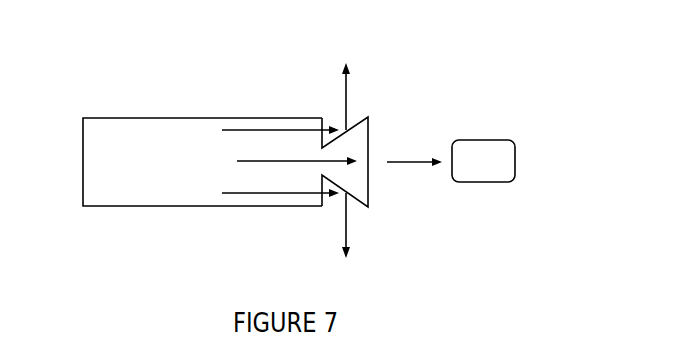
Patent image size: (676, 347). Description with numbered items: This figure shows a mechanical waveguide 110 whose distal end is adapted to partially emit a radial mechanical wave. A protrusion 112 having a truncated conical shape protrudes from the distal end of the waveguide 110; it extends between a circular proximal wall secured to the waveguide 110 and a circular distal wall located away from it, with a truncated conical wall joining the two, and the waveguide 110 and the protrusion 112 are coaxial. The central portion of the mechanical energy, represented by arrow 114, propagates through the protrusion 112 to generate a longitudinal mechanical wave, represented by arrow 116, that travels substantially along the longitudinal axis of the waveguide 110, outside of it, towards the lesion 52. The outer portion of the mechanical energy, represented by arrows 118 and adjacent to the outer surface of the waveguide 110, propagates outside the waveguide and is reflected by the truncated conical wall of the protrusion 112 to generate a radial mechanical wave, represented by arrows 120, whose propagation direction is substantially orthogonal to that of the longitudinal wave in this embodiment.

The mechanical waveguide 110 is at (166, 130).
The protrusion 112 is at (368, 140).
The arrow representing the central portion of the mechanical energy 114 is at (248, 161).
The arrow representing the longitudinal mechanical wave 116 is at (405, 165).
The arrow representing the outer portion of the mechanical energy 118 is at (259, 130).
The transverse flows 120 is at (346, 93).
The lesion 52 is at (502, 152).